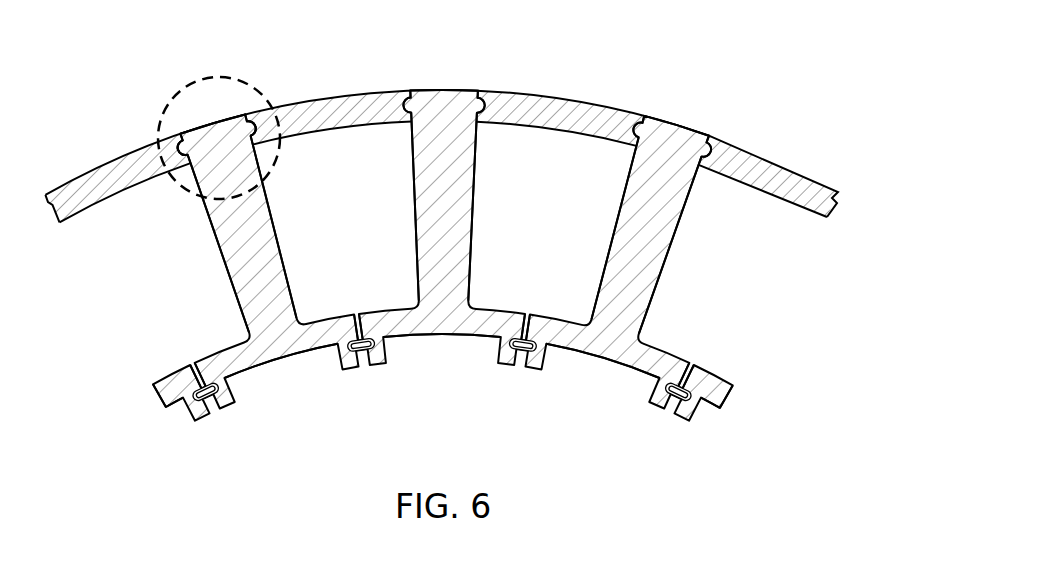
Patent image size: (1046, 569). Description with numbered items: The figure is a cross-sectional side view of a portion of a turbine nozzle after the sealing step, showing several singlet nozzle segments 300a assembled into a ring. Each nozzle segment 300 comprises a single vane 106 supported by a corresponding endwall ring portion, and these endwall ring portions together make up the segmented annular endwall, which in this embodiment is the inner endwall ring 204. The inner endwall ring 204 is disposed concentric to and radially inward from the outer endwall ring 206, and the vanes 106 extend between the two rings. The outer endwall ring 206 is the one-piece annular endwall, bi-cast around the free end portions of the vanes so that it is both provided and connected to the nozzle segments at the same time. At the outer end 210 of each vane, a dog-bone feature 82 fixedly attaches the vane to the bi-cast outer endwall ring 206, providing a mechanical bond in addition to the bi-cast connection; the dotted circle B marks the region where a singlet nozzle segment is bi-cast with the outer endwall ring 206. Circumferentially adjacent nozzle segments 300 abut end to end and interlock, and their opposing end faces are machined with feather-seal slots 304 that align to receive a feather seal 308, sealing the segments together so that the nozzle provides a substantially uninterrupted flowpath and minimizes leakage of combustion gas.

The dog-bone feature 82 is at (177, 146).
The vane 106 is at (639, 187).
The inner endwall ring 204 is at (597, 380).
The outer endwall ring 206 is at (567, 99).
The outer end 210 is at (207, 127).
The nozzle segment 300 is at (168, 368).
The singlet nozzle segment 300a is at (668, 349).
The feather-seal slot 304 is at (498, 345).
The feather seal 308 is at (190, 392).
The dotted circle B is at (214, 76).